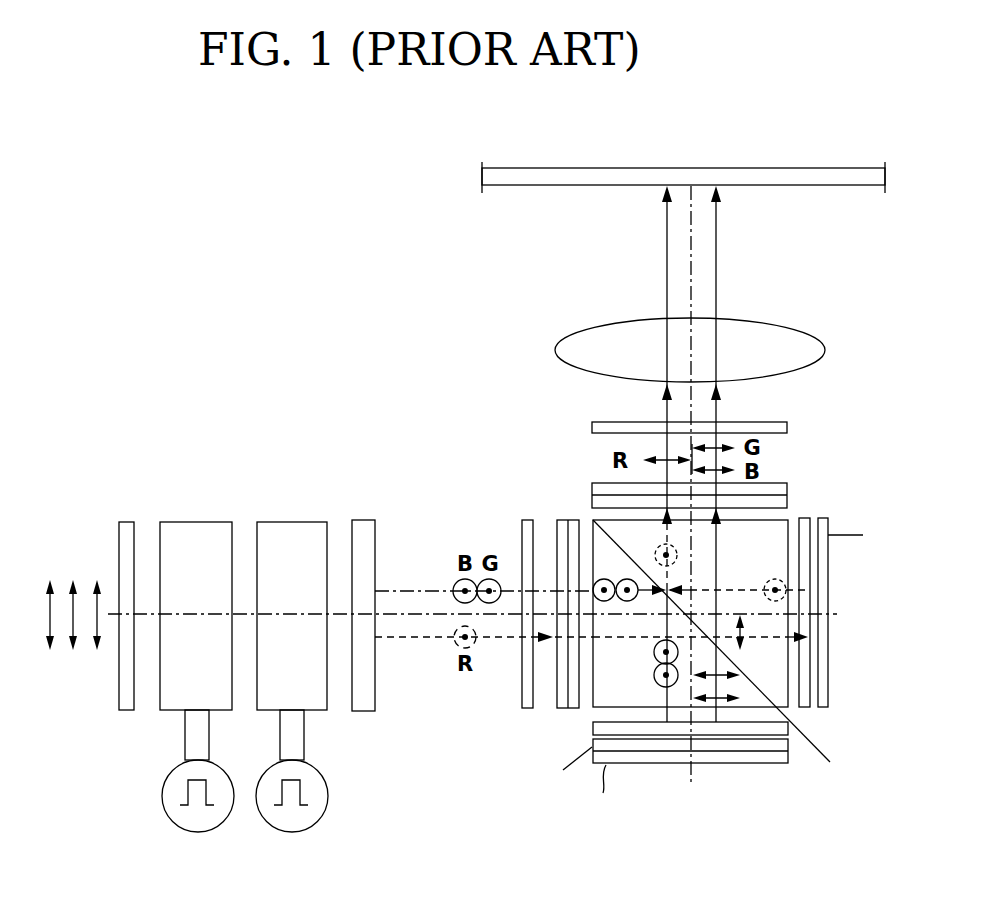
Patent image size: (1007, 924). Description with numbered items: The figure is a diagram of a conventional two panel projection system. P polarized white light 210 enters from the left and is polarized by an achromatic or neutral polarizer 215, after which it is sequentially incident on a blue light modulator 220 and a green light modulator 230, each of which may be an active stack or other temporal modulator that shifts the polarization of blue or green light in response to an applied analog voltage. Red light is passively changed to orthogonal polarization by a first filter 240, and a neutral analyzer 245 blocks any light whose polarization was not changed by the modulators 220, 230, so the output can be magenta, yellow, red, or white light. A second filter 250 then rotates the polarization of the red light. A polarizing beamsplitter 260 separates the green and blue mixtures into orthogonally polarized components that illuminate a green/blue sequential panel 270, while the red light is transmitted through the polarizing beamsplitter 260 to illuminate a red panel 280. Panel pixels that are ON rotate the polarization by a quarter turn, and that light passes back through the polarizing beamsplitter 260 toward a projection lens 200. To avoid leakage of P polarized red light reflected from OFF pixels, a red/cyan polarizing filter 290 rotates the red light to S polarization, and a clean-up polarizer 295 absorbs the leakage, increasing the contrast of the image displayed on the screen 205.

The projection lens 200 is at (555, 350).
The screen 205 is at (527, 186).
The P polarized white light 210 is at (73, 690).
The achromatic or neutral polarizer 215 is at (128, 522).
The blue light modulator 220 is at (200, 522).
The green light modulator 230 is at (294, 522).
The first filter 240 is at (364, 520).
The neutral analyzer 245 is at (526, 520).
The second filter 250 is at (568, 520).
The polarizing beamsplitter 260 is at (726, 657).
The green/blue sequential panel 270 is at (580, 738).
The red panel 280 is at (830, 707).
The red/cyan polarizing filter 290 is at (787, 493).
The clean-up polarizer 295 is at (787, 428).